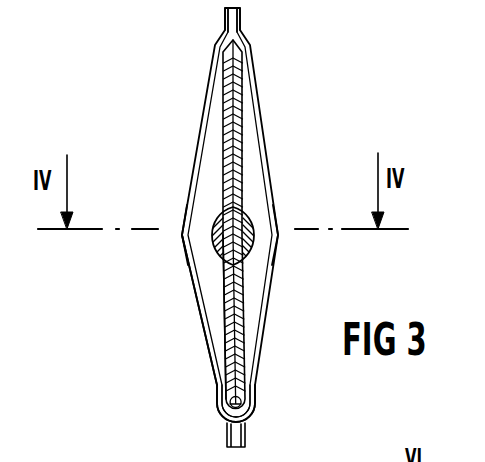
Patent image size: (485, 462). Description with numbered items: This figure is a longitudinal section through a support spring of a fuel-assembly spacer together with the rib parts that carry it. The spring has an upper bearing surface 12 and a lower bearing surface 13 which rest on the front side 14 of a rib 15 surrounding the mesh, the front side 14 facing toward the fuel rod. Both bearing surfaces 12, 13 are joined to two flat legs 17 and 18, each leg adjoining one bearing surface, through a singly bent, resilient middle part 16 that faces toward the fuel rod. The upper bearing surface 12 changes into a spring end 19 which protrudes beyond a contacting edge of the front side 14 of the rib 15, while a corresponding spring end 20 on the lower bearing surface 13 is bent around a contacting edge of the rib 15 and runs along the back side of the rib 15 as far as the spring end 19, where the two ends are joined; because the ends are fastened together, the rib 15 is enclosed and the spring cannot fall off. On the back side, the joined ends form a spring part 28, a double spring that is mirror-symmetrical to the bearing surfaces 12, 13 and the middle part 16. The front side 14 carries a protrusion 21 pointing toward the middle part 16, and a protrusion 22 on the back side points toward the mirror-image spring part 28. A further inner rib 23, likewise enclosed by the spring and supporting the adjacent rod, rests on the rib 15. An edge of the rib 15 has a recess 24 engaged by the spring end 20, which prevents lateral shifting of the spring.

The upper bearing surface 12 is at (218, 70).
The lower bearing surface 13 is at (216, 380).
The front side 14 is at (226, 120).
The rib 15 is at (226, 320).
The singly bent, resilient middle part 16 is at (183, 233).
The flat leg 17 is at (198, 176).
The flat leg 18 is at (197, 297).
The spring end 19 is at (224, 18).
The spring end 20 is at (218, 400).
The protrusion 21 is at (212, 220).
The protrusion 22 is at (254, 213).
The inner rib 23 is at (240, 120).
The recess 24 is at (226, 427).
The spring part 28 is at (284, 237).